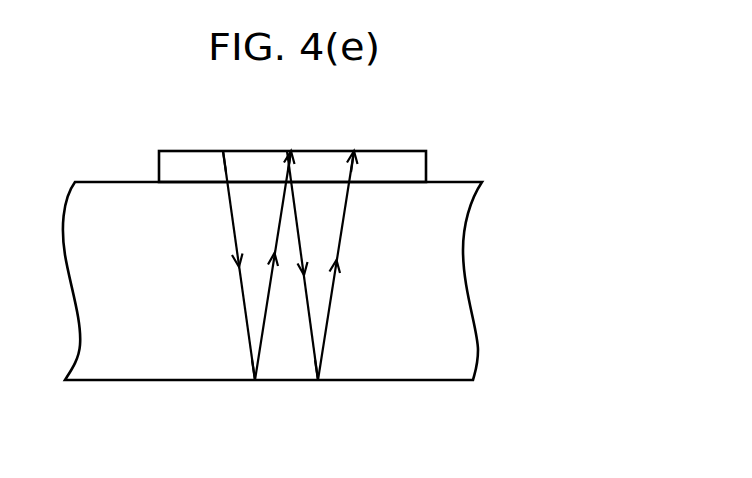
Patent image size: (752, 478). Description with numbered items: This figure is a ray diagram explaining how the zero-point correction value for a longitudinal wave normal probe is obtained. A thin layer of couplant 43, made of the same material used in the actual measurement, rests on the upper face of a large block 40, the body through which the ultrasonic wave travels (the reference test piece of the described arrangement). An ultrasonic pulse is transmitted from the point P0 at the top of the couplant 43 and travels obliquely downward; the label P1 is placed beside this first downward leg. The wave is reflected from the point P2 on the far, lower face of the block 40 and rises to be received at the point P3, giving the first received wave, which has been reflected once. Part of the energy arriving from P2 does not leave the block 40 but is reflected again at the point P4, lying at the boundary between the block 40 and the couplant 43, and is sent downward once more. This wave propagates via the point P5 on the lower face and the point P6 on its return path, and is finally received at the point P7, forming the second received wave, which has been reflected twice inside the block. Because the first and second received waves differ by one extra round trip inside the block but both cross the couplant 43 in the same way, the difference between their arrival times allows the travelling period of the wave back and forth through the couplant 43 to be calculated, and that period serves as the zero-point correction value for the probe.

The substrate 40 is at (462, 300).
The couplant 43 is at (426, 158).
The transmission point P0 is at (226, 142).
The light path segment P1 is at (226, 265).
The first reflection point P2 is at (261, 393).
The reception point of first reflected wave P3 is at (292, 142).
The boundary reflection point P4 is at (289, 265).
The second far-face reflection point P5 is at (324, 393).
The propagation point P6 is at (351, 265).
The reception point of second reflected wave P7 is at (359, 142).